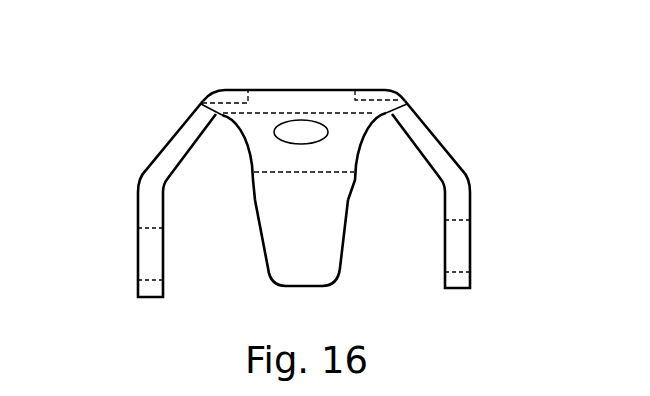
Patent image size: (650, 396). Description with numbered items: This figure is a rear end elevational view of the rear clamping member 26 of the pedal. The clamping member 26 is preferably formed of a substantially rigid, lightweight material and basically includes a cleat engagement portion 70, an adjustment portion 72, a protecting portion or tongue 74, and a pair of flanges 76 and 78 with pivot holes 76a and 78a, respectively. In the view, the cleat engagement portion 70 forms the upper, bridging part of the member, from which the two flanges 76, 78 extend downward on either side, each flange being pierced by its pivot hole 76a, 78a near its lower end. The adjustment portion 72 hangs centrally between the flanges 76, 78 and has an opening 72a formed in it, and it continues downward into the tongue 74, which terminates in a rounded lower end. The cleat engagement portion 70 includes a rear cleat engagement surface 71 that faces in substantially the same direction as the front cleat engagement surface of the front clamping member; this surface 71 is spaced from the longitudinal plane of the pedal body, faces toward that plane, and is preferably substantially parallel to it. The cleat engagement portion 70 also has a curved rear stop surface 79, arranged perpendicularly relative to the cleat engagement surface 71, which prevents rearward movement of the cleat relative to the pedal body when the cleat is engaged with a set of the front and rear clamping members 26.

The rear clamping member 26 is at (427, 95).
The cleat engagement portion 70 is at (366, 80).
The rear cleat engagement surface 71 is at (235, 122).
The adjustment portion 72 is at (371, 149).
The aperture 72a is at (298, 142).
The protecting portion or tongue 74 is at (357, 237).
The flange 76 is at (455, 157).
The pivot hole 76a is at (470, 224).
The flange 78 is at (150, 163).
The pivot hole 78a is at (140, 232).
The curved rear stop surface 79 is at (282, 105).